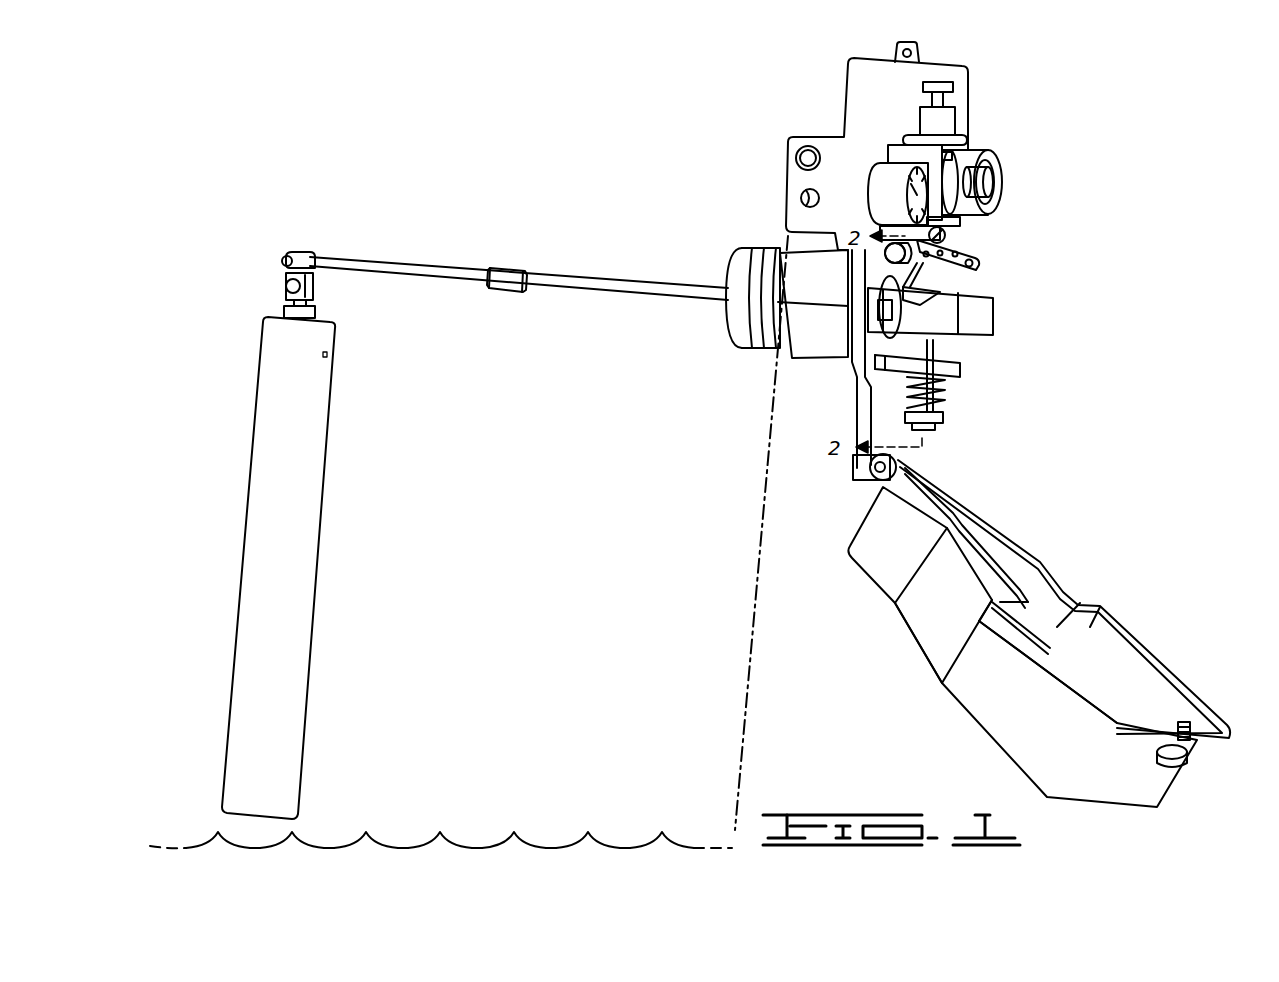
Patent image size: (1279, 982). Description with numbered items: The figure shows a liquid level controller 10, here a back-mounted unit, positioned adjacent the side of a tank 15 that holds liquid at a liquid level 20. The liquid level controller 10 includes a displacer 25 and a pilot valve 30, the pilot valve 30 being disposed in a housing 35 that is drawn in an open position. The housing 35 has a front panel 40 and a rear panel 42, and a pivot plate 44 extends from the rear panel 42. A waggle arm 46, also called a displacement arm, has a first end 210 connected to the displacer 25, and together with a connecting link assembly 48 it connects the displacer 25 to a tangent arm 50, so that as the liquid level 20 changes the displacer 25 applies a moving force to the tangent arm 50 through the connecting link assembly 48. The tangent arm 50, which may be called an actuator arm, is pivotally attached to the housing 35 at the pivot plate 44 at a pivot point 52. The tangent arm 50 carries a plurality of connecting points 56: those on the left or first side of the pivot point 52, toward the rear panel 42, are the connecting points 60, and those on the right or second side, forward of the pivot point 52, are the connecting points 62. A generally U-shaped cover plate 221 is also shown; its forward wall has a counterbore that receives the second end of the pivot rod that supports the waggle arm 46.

The liquid level controller 10 is at (1100, 181).
The tank 15 is at (748, 690).
The liquid level 20 is at (560, 838).
The displacer 25 is at (256, 445).
The pilot valve 30 is at (962, 152).
The housing 35 is at (1125, 628).
The front panel 40 is at (990, 722).
The rear panel 42 is at (846, 104).
The pivot plate 44 is at (962, 228).
The waggle arm 46 is at (437, 263).
The connecting link assembly 48 is at (955, 292).
The tangent arm 50 is at (980, 258).
The pivot point 52 is at (947, 236).
The connecting points 56 is at (852, 262).
The connecting points 60 is at (895, 253).
The connecting points 62 is at (985, 266).
The first end 210 is at (315, 252).
The cover plate 221 is at (978, 340).